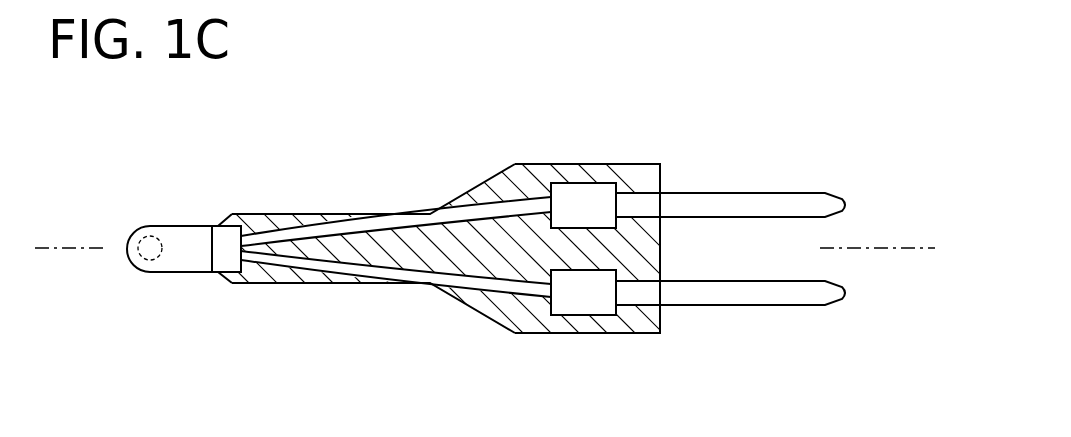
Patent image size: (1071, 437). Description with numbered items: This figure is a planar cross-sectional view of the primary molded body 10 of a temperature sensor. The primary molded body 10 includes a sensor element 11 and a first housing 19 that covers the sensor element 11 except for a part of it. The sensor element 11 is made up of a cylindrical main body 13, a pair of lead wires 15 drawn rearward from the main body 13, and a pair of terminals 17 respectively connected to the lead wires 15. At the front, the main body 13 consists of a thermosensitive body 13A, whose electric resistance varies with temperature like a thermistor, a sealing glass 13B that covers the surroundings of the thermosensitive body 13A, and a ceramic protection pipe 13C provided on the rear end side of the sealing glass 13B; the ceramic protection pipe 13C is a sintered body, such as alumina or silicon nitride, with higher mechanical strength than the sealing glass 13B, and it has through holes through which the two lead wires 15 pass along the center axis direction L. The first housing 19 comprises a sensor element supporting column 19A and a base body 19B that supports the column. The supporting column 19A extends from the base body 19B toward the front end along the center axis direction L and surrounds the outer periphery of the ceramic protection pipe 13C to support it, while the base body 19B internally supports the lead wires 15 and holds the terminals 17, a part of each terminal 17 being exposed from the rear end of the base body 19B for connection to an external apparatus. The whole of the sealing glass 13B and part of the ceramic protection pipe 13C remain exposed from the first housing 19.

The primary molded body 10 is at (668, 98).
The sensor element 11 is at (422, 198).
The main body 13 is at (180, 215).
The thermosensitive body 13A is at (148, 274).
The sealing glass 13B is at (186, 274).
The ceramic protection pipe 13C is at (215, 274).
The lead wires 15 is at (521, 203).
The terminals 17 is at (740, 193).
The first housing 19 is at (426, 220).
The sensor element supporting column 19A is at (313, 214).
The base body 19B is at (578, 164).
The center axis direction L is at (62, 252).